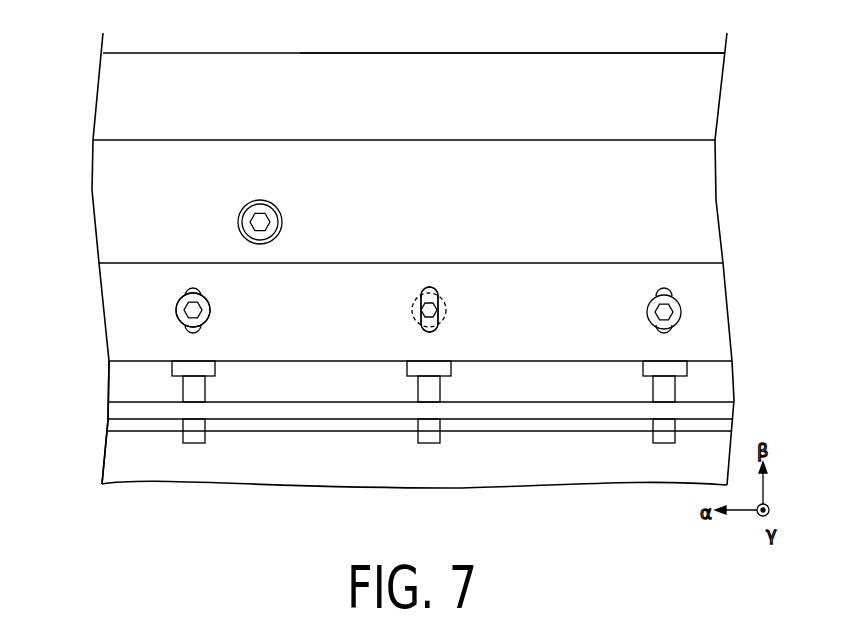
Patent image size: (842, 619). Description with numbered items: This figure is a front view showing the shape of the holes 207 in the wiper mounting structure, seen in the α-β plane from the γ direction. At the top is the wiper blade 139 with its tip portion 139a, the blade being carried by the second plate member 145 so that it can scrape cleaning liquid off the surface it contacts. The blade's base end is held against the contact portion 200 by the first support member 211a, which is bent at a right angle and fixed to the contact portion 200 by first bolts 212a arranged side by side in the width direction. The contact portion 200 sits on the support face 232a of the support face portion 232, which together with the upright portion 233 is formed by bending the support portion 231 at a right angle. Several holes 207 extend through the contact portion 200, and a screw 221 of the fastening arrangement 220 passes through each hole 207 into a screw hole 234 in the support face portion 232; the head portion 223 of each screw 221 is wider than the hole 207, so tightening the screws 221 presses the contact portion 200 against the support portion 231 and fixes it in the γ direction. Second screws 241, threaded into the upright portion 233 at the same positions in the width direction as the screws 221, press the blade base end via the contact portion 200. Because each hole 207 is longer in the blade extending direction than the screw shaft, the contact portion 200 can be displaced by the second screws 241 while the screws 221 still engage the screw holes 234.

The wiper blade 139 is at (488, 65).
The tip portion 139a is at (581, 52).
The first support member 211a is at (117, 154).
The first bolt 212a is at (240, 218).
The contact portion 200 is at (705, 306).
The hole 207 is at (193, 288).
The fastening member 220 is at (415, 326).
The screw 221 is at (176, 306).
The head portion 223 is at (176, 320).
The screw hole 234 is at (438, 326).
The support face portion 232 is at (703, 383).
The support face 232a is at (705, 392).
The upright portion 233 is at (720, 411).
The support portion 231 is at (108, 387).
The second plate member 145 is at (114, 452).
The second screw 241 is at (193, 443).